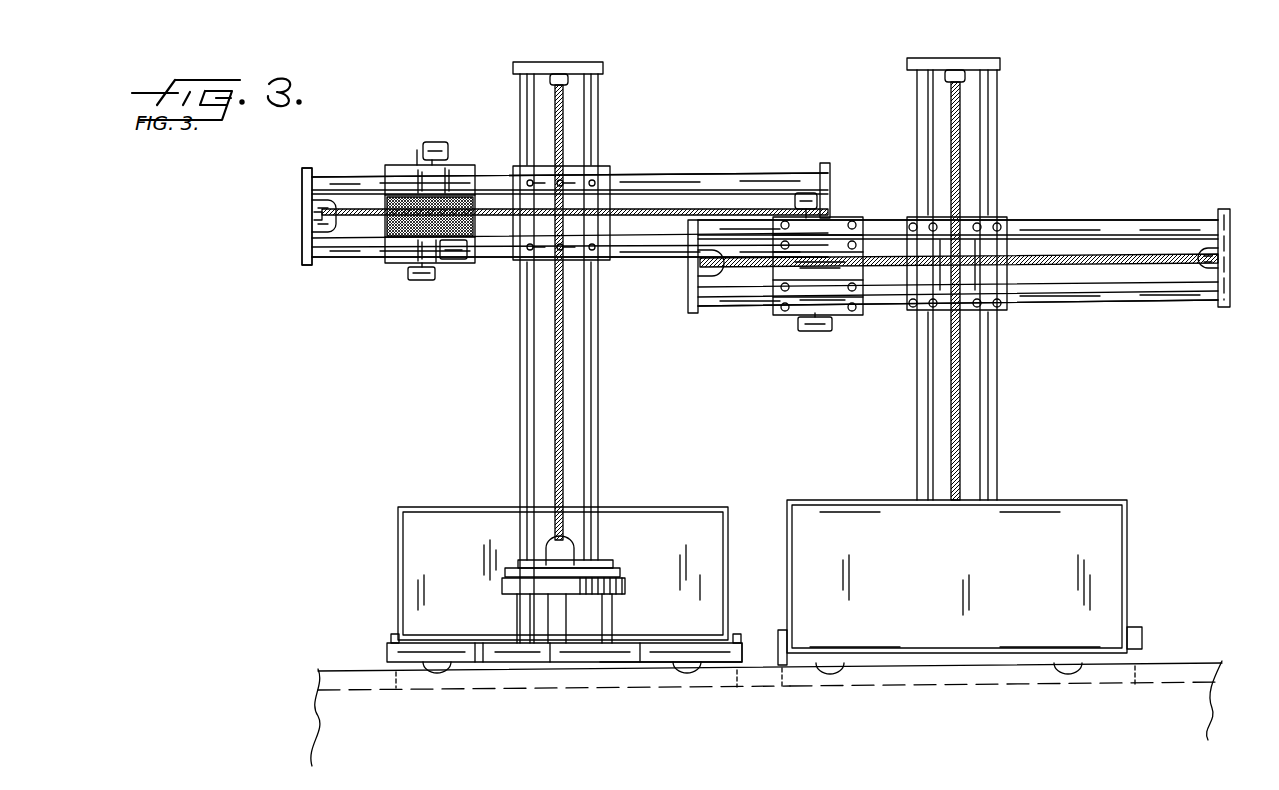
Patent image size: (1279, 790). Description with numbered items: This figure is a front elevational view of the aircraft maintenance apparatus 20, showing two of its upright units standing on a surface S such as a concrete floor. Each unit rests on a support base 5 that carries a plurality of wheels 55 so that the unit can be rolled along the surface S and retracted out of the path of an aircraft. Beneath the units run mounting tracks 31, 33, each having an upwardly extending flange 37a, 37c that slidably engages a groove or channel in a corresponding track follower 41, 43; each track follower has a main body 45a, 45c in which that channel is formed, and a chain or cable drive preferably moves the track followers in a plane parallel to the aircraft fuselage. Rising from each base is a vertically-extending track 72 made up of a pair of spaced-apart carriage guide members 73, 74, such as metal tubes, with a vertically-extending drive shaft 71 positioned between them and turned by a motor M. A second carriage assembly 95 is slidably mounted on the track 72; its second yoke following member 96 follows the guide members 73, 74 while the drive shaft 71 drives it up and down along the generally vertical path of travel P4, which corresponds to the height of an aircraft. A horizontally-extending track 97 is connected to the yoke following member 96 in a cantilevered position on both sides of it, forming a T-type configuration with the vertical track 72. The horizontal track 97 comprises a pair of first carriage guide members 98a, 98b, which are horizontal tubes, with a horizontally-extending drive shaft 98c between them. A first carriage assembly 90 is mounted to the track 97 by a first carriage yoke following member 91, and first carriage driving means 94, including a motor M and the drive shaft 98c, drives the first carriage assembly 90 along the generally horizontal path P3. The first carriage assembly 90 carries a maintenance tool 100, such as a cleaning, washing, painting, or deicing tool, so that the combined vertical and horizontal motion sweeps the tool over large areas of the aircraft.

The aircraft maintenance apparatus 20 is at (412, 71).
The mounting track 31 is at (372, 694).
The mounting track 33 is at (962, 690).
The flange 37a is at (400, 674).
The flange 37c is at (1135, 667).
The track follower 41 is at (407, 507).
The track follower 43 is at (808, 500).
The main body 45a is at (464, 560).
The main body 45c is at (1024, 560).
The frame 5 is at (668, 641).
The wheels 55 is at (455, 674).
The vertically-extending drive shaft 71 is at (569, 500).
The vertically-extending track 72 is at (604, 405).
The carriage guide member 73 is at (521, 388).
The carriage guide member 74 is at (600, 460).
The first carriage means 90 is at (380, 283).
The first carriage yoke following member 91 is at (415, 172).
The first carriage driving means 94 is at (318, 222).
The second carriage means 95 is at (599, 155).
The second yoke following member 96 is at (600, 200).
The horizontally-extending track 97 is at (500, 160).
The first carriage guide member 98a is at (343, 257).
The first carriage guide member 98b is at (330, 178).
The horizontally-extending drive shaft 98c is at (320, 211).
The maintenance tool 100 is at (460, 242).
The motor M is at (440, 142).
The surface S is at (330, 669).
The path of travel P3 is at (372, 147).
The path of travel P4 is at (498, 294).